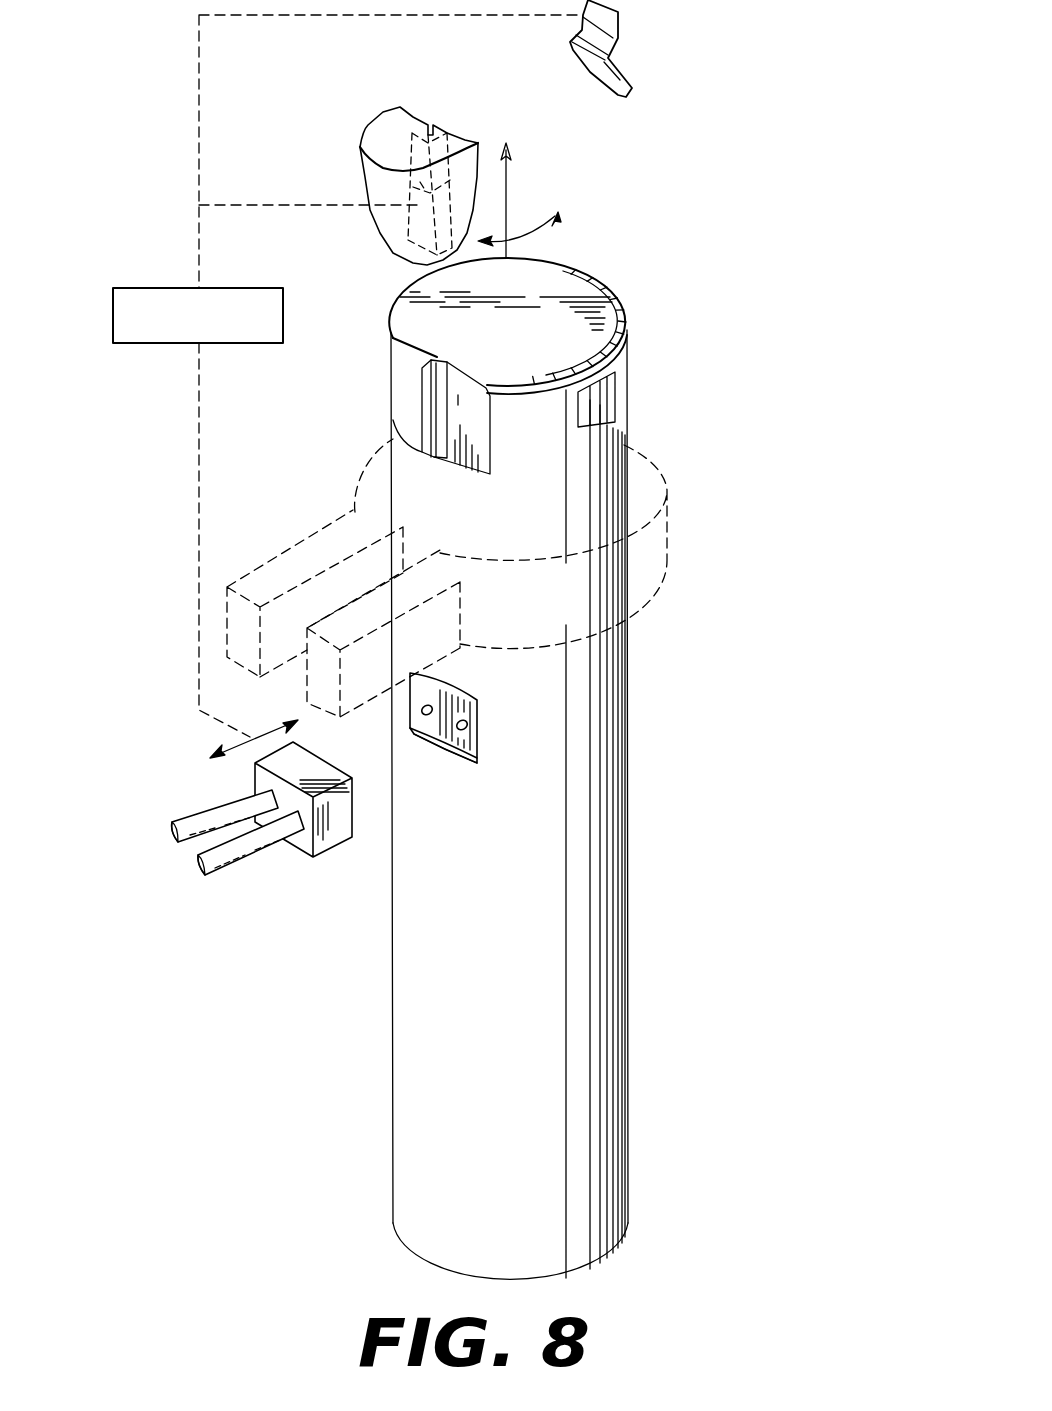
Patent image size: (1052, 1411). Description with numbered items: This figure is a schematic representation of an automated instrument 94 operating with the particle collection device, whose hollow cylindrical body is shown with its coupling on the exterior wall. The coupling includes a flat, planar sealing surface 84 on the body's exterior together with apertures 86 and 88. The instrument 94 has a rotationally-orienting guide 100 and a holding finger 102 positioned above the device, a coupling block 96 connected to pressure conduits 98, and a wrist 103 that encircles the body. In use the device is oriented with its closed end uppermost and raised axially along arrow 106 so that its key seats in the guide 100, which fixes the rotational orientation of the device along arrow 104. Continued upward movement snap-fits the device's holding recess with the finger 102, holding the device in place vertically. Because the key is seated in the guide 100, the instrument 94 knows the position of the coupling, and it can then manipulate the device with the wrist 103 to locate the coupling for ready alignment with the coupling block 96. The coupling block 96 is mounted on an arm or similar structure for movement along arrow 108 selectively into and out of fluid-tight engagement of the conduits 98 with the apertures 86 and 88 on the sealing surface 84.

The sealing surface 84 is at (477, 752).
The aperture 86 is at (424, 743).
The aperture 88 is at (467, 723).
The automated instrument 94 is at (153, 288).
The coupling block 96 is at (330, 838).
The pressure conduits 98 is at (242, 840).
The rotationally-orienting guide 100 is at (435, 132).
The holding finger 102 is at (575, 38).
The wrist 103 is at (645, 575).
The arrow 104 is at (540, 234).
The arrow 106 is at (507, 178).
The arrow 108 is at (268, 735).